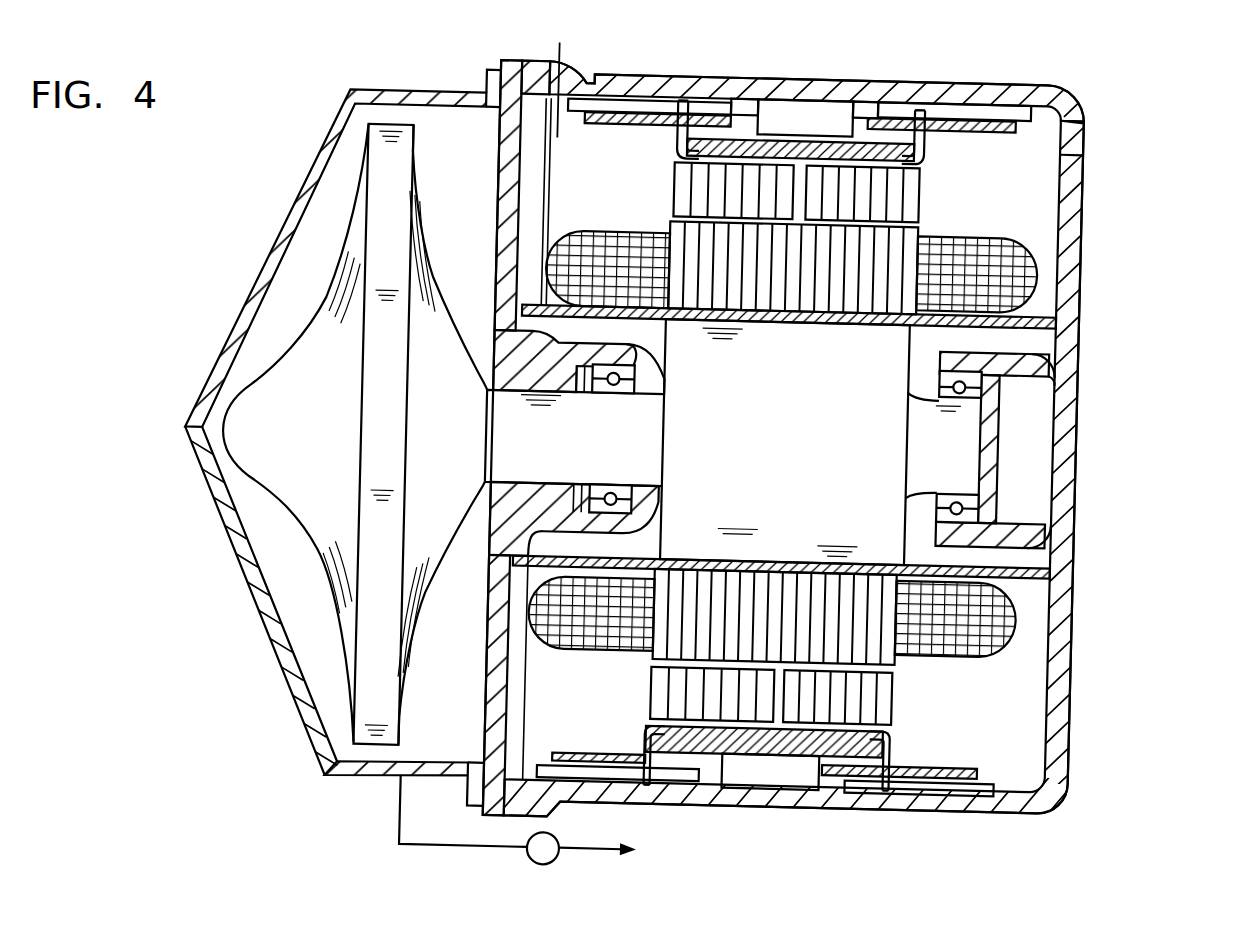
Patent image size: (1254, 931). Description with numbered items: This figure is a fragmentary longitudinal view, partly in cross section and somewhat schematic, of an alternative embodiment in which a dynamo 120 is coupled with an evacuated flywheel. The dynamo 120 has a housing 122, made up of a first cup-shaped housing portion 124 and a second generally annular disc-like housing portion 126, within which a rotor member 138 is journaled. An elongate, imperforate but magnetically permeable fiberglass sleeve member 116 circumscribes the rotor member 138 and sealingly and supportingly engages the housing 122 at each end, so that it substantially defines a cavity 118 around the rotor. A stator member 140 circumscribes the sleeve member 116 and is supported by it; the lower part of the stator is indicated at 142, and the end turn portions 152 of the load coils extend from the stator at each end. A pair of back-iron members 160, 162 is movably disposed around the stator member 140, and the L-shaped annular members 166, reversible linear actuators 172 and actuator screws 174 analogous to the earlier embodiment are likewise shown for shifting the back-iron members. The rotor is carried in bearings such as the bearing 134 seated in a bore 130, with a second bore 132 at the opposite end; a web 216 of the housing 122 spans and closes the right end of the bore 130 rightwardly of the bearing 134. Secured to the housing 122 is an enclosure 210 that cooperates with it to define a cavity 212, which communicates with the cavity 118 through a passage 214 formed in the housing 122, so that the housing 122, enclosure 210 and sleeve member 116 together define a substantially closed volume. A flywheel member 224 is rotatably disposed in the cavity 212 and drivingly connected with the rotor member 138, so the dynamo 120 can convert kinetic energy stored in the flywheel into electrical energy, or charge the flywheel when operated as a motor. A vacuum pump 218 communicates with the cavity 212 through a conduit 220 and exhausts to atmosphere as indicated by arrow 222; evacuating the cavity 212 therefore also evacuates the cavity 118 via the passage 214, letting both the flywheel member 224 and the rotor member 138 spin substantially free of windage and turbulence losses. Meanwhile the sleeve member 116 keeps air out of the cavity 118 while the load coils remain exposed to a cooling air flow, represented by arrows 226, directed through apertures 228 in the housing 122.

The sleeve member 116 is at (1052, 311).
The cavity 118 is at (948, 347).
The dynamo 120 is at (1149, 178).
The housing 122 is at (1063, 660).
The first cup-shaped housing portion 124 is at (778, 88).
The second annular disc-like housing portion 126 is at (510, 228).
The bore 130 is at (1039, 386).
The bore 132 is at (643, 460).
The bearing 134 is at (970, 497).
The rotor member 138 is at (800, 448).
The stator member 140 is at (935, 223).
The armature laminations 142 is at (891, 587).
The end turn portions 152 is at (1013, 268).
The back-iron member 160 is at (891, 197).
The back-iron member 162 is at (682, 195).
The L-shaped annular members 166 is at (660, 733).
The reversible linear actuators 172 is at (678, 769).
The actuator screw 174 is at (928, 764).
The enclosure 210 is at (229, 343).
The cavity 212 is at (474, 157).
The passage 214 is at (500, 334).
The web 216 is at (995, 435).
The vacuum pump 218 is at (572, 860).
The conduit 220 is at (409, 834).
The arrow 222 is at (610, 849).
The flywheel member 224 is at (374, 215).
The arrows 226 is at (550, 143).
The apertures 228 is at (568, 78).